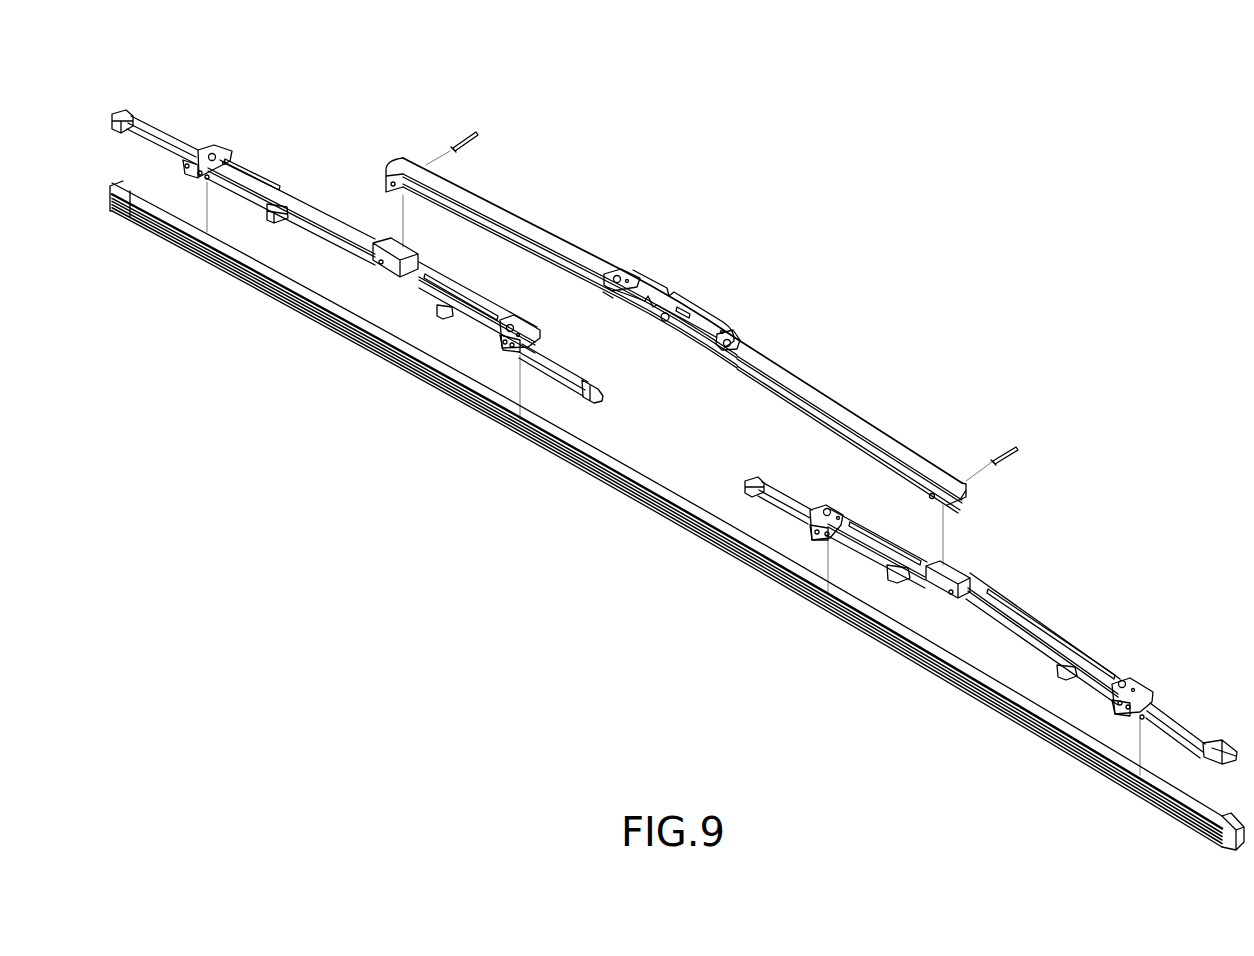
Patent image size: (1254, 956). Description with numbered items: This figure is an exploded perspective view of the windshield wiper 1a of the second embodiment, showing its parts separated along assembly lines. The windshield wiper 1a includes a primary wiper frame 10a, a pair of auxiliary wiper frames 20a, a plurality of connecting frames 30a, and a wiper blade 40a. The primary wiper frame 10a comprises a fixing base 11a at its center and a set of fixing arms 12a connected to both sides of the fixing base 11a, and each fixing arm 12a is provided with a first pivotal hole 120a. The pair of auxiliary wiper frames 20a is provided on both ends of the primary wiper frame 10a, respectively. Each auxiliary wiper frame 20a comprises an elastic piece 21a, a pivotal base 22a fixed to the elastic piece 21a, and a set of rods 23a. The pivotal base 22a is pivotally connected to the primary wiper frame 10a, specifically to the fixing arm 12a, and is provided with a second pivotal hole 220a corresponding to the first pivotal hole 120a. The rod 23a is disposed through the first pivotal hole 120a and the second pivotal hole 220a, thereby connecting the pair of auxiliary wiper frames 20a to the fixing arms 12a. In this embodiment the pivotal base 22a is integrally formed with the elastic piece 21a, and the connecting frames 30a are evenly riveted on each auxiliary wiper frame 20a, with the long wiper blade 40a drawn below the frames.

The windshield wiper 1a is at (691, 109).
The primary wiper frame 10a is at (676, 335).
The fixing base 11a is at (688, 298).
The fixing arm 12a is at (823, 399).
The first pivotal hole 120a is at (928, 496).
The auxiliary wiper frame 20a is at (675, 426).
The elastic piece 21a is at (1082, 655).
The pivotal base 22a is at (696, 445).
The second pivotal hole 220a is at (949, 597).
The rod 23a is at (1003, 443).
The connecting frame 30a is at (193, 140).
The wiper blade 40a is at (786, 592).